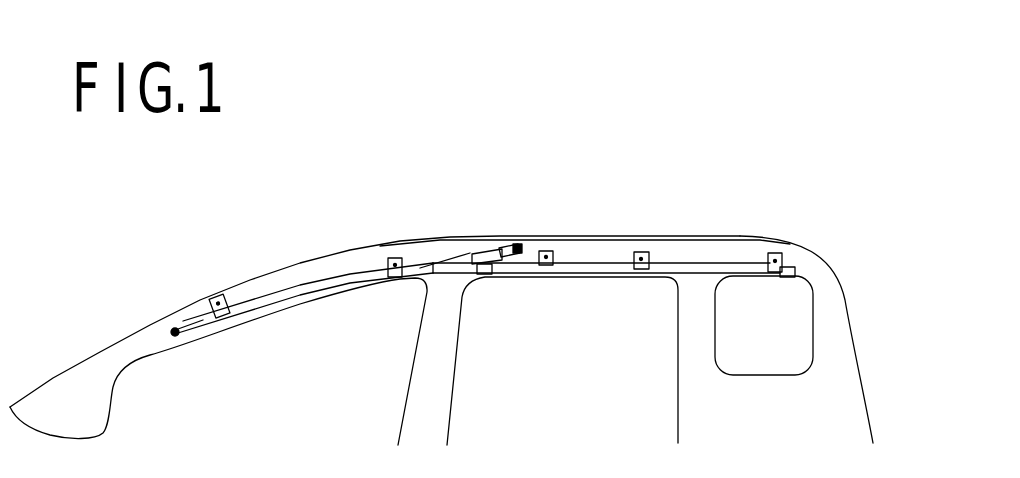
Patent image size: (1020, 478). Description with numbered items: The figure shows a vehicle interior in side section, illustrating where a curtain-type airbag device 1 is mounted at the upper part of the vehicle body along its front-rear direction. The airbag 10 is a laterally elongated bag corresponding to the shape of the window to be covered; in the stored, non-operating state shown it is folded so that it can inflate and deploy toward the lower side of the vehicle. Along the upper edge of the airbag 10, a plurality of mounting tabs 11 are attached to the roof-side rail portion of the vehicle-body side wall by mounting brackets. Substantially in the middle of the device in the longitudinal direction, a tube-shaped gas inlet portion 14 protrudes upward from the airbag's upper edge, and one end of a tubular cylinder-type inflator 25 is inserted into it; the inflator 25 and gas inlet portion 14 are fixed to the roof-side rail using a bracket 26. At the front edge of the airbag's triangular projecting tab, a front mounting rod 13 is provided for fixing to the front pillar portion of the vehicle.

The airbag device 1 is at (302, 213).
The airbag 10 is at (273, 293).
The mounting tabs 11 is at (215, 294).
The front mounting rod 13 is at (174, 328).
The gas inlet portion 14 is at (482, 250).
The inflator 25 is at (504, 245).
The bracket 26 is at (485, 274).